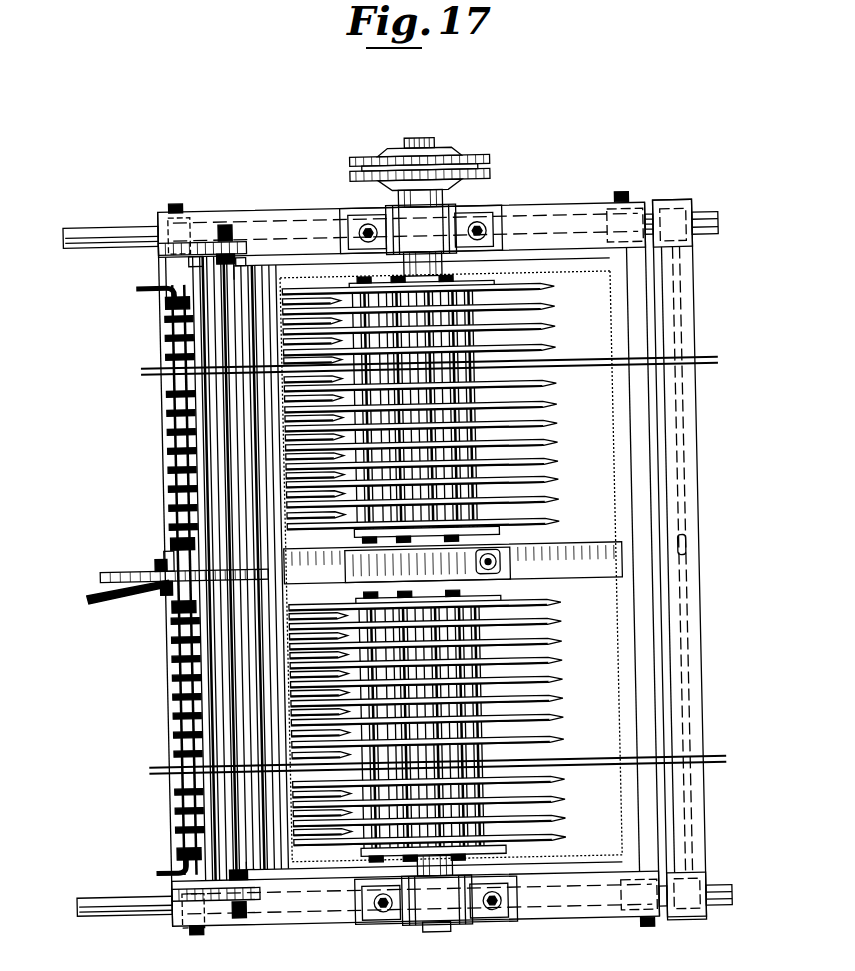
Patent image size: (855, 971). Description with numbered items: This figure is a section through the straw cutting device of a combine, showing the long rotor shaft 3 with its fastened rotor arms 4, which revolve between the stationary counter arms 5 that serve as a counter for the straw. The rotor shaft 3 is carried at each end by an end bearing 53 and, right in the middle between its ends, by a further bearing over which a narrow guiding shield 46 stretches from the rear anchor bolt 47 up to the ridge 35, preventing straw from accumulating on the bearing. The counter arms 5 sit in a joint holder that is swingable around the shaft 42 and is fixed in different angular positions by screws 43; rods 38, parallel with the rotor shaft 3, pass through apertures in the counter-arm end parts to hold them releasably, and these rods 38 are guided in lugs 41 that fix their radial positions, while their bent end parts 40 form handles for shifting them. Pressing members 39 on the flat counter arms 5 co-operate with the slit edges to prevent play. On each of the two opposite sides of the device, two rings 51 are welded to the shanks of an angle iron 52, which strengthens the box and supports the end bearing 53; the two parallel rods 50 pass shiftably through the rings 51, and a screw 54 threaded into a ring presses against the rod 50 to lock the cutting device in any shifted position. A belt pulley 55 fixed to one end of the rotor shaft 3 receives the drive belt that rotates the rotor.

The rotor shaft 3 is at (430, 142).
The belt pulley 55 is at (490, 170).
The shaft of the holder 42 is at (172, 225).
The screws 43 is at (232, 222).
The end bearing 53 is at (385, 214).
The angle iron 52 is at (568, 200).
The screw 54 is at (628, 197).
The rings 51 is at (655, 210).
The rods 50 is at (708, 214).
The end parts of the rods 40 is at (142, 283).
The lugs 41 is at (168, 296).
The pressing members 39 is at (168, 409).
The rods 38 is at (170, 452).
The ridge 35 is at (287, 404).
The rotor arms 4 is at (556, 444).
The rear anchor bolt 47 is at (500, 563).
The guiding shield 46 is at (300, 578).
The counter arms 5 is at (290, 660).